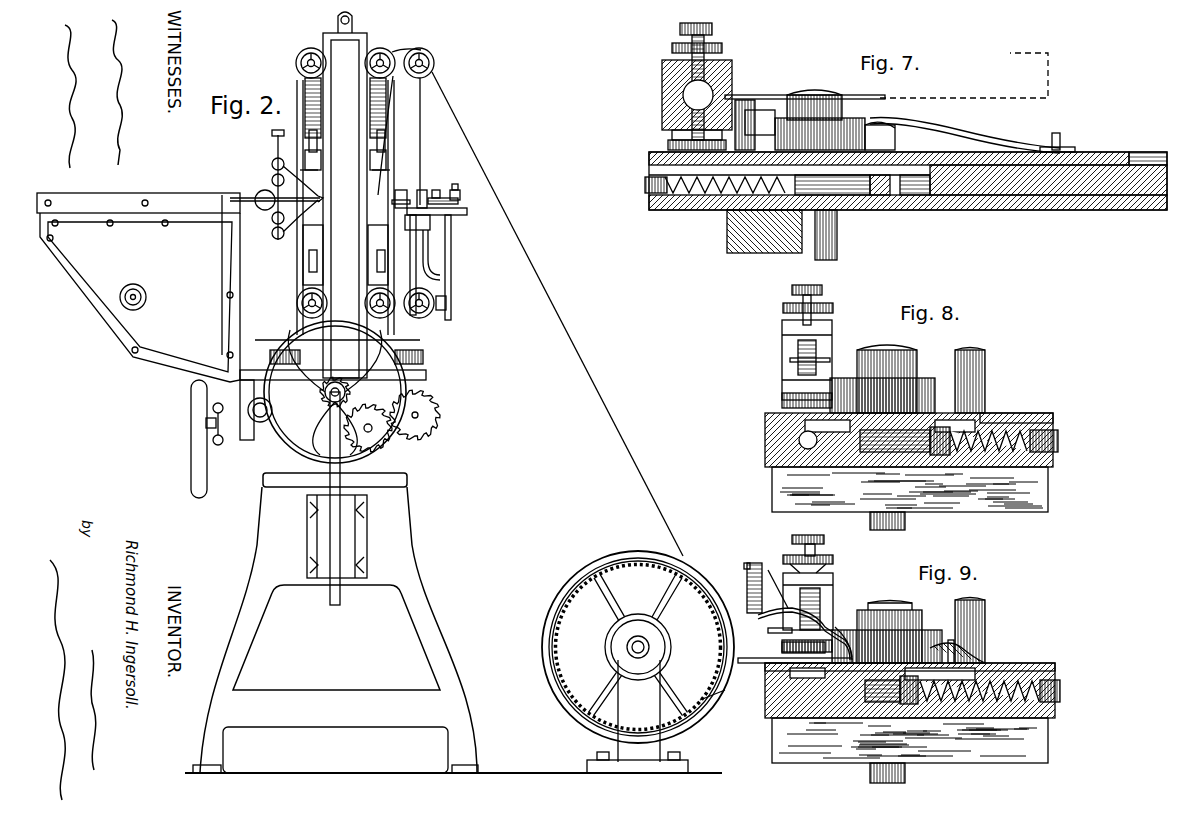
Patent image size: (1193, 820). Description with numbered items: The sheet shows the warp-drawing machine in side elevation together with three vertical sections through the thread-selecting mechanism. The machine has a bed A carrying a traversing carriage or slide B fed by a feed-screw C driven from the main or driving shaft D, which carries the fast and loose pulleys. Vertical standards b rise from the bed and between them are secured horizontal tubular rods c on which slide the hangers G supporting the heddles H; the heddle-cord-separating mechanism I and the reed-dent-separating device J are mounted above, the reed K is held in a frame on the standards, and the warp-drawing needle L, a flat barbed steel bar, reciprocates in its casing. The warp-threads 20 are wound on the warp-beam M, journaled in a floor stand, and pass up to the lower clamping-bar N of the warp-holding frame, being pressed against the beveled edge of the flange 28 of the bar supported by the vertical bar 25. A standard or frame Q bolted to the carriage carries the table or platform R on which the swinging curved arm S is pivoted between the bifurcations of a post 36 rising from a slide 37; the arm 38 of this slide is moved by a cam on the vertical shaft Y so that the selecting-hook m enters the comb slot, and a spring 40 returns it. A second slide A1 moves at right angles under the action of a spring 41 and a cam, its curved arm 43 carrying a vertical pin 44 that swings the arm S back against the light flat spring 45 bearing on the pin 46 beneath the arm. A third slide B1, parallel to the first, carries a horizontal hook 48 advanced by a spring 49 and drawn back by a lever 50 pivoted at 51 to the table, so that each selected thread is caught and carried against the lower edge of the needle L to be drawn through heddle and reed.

In FIG. 2, the vertical end pieces or standards b is at (345, 308).
In FIG. 2, the horizontal tubular rods c is at (309, 52).
In FIG. 2, the hangers G is at (309, 138).
In FIG. 2, the heddles H is at (396, 168).
In FIG. 2, the reed K is at (272, 182).
In FIG. 2, the reed-dent-separating device J is at (258, 195).
In FIG. 2, the warp-drawing needle L is at (270, 218).
In FIG. 2, the heddle-cord-separating mechanism I is at (405, 196).
In FIG. 2, the swinging curved arm S is at (443, 191).
In FIG. 7, the swinging curved arm S is at (765, 96).
In FIG. 8, the swinging curved arm S is at (790, 360).
In FIG. 9, the swinging curved arm S is at (805, 624).
In FIG. 2, the table or platform R is at (467, 211).
In FIG. 7, the table or platform R is at (1130, 205).
In FIG. 8, the table or platform R is at (1053, 457).
In FIG. 9, the table or platform R is at (1055, 707).
In FIG. 2, the standard or frame Q is at (451, 258).
In FIG. 2, the lower clamping-bar N is at (446, 303).
In FIG. 2, the traversing carriage or slide B is at (426, 372).
In FIG. 2, the main or driving shaft D is at (318, 396).
In FIG. 2, the bed A is at (392, 455).
In FIG. 2, the feed-screw C is at (255, 420).
In FIG. 2, the warp-beam M is at (638, 662).
In FIG. 2, the warp-threads 20 is at (503, 216).
In FIG. 2, the vertical bar 25 is at (421, 156).
In FIG. 2, the horizontal flange 28 is at (720, 693).
In FIG. 2, the post 36 is at (460, 194).
In FIG. 7, the post 36 is at (663, 73).
In FIG. 8, the post 36 is at (782, 347).
In FIG. 9, the post 36 is at (832, 592).
In FIG. 7, the slide 37 is at (660, 155).
In FIG. 8, the slide 37 is at (768, 430).
In FIG. 9, the slide 37 is at (775, 678).
In FIG. 7, the arm 38 is at (803, 150).
In FIG. 7, the spring 40 is at (700, 195).
In FIG. 8, the spring 41 is at (1000, 420).
In FIG. 7, the curved arm 43 is at (870, 125).
In FIG. 8, the curved arm 43 is at (940, 380).
In FIG. 9, the curved arm 43 is at (782, 648).
In FIG. 9, the vertical pin 44 is at (768, 630).
In FIG. 9, the flat spring 45 is at (825, 620).
In FIG. 9, the pin 46 is at (772, 580).
In FIG. 7, the hook 48 is at (1060, 140).
In FIG. 9, the hook 48 is at (750, 675).
In FIG. 9, the spring 49 is at (1000, 678).
In FIG. 7, the lever 50 is at (960, 130).
In FIG. 9, the lever 50 is at (975, 650).
In FIG. 7, the pivot 51 is at (755, 125).
In FIG. 9, the pivot 51 is at (985, 625).
In FIG. 7, the vertical shaft Y is at (837, 235).
In FIG. 8, the vertical shaft Y is at (905, 522).
In FIG. 9, the vertical shaft Y is at (905, 773).
In FIG. 9, the selecting-hook m is at (747, 568).
In FIG. 8, the slide A1 is at (1028, 418).
In FIG. 7, the slide B1 is at (1075, 151).
In FIG. 9, the slide B1 is at (1030, 665).